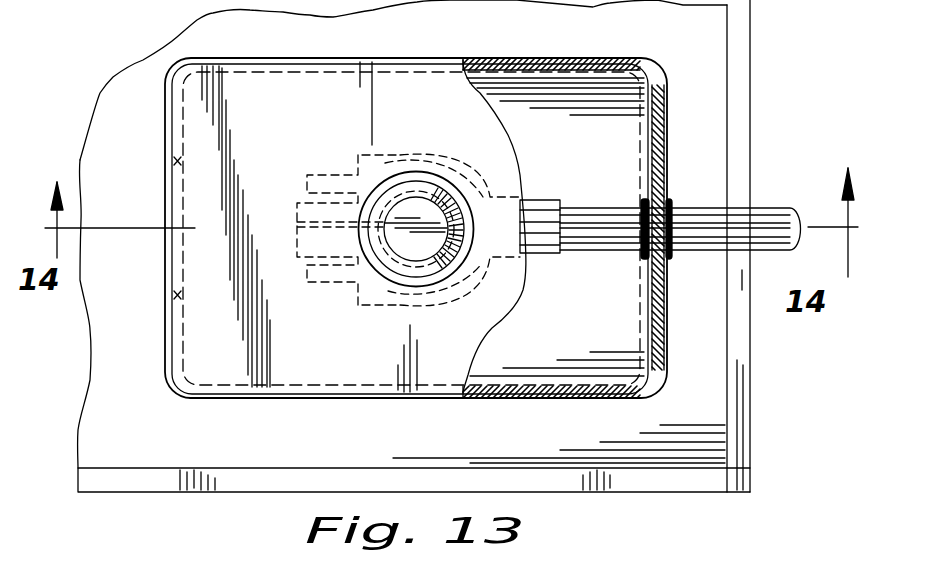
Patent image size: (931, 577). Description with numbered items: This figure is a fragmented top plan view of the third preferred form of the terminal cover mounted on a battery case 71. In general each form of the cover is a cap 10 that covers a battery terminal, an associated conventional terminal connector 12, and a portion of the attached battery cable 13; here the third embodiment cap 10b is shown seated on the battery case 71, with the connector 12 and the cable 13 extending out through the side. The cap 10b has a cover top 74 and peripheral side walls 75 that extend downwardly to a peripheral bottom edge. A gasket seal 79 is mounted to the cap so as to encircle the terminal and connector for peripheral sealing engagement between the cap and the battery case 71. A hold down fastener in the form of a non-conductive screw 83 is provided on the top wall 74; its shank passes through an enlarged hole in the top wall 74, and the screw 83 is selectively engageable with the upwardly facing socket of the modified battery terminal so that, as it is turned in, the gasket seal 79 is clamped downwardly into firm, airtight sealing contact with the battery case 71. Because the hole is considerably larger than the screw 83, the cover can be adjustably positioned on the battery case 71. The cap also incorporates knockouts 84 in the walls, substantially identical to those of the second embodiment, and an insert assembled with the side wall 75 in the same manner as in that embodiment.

The cap 10 is at (693, 110).
The third embodiment cap 10b is at (245, 400).
The terminal connector 12 is at (538, 207).
The battery cable 13 is at (775, 217).
The battery case 71 is at (700, 458).
The cover top 74 is at (338, 351).
The peripheral side walls 75 is at (365, 399).
The gasket seal 79 is at (648, 140).
The non-conductive screw 83 is at (405, 213).
The knockouts 84 is at (520, 65).